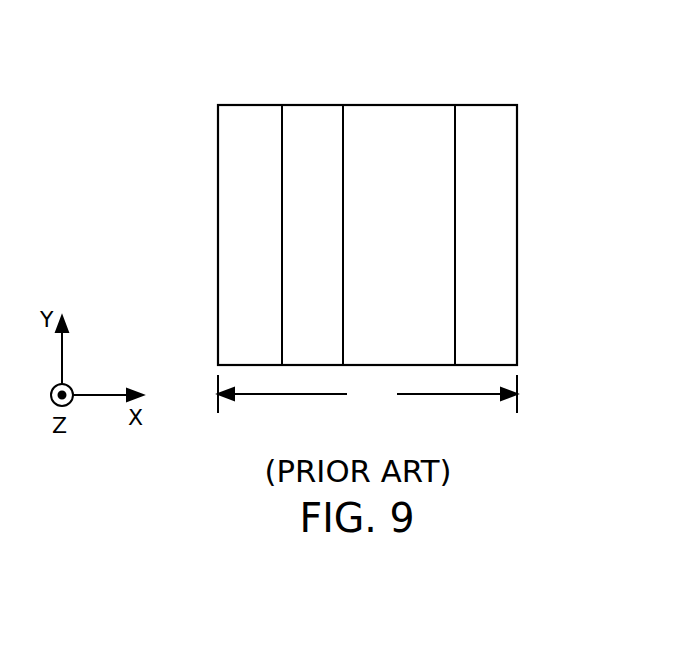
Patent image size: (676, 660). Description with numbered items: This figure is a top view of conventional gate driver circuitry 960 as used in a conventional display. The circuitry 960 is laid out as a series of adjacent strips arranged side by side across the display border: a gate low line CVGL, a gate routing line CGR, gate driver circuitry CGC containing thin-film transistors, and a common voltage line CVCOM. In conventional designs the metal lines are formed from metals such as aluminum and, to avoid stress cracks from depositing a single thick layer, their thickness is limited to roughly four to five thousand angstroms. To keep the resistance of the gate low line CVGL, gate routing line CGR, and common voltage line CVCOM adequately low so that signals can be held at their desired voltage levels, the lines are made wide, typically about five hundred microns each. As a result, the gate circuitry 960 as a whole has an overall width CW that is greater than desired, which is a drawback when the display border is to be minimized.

The conventional gate driver circuit 960 is at (295, 234).
The gate low line CVGL is at (278, 96).
The gate routing line CGR is at (283, 96).
The gate driver circuitry CGC is at (452, 96).
The common voltage line CVCOM is at (457, 96).
The width CW is at (367, 394).